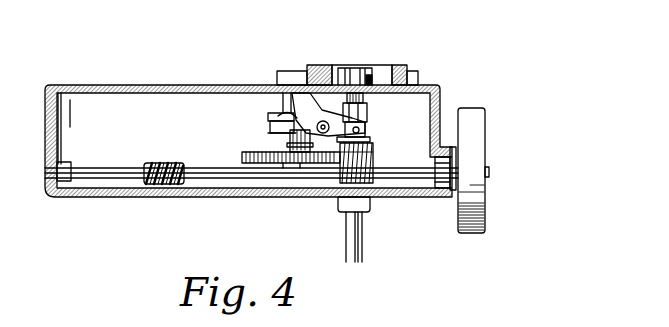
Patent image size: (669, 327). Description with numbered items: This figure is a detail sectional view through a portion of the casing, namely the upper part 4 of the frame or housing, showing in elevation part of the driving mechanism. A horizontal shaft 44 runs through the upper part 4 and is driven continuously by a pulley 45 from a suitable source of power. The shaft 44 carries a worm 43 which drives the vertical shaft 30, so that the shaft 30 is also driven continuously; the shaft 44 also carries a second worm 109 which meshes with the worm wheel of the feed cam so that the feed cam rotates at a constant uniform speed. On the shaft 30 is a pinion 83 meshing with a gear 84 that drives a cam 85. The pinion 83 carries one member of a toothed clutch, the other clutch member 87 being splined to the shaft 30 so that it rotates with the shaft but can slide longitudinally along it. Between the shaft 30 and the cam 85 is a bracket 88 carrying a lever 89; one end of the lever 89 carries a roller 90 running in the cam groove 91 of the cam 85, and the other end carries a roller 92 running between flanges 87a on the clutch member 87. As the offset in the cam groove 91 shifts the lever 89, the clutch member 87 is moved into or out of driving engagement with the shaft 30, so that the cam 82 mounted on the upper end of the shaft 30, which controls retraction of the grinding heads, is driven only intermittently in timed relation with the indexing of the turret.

The upper part 4 is at (46, 141).
The shaft 30 is at (363, 243).
The worm 43 is at (333, 188).
The shaft 44 is at (243, 190).
The pulley 45 is at (478, 137).
The cam 82 is at (385, 76).
The pinion 83 is at (373, 157).
The gear 84 is at (243, 157).
The cam 85 is at (268, 85).
The clutch member 87 is at (370, 146).
The flanges 87a is at (372, 127).
The bracket 88 is at (310, 103).
The lever 89 is at (337, 71).
The roller 90 is at (282, 120).
The cam groove 91 is at (272, 130).
The roller 92 is at (365, 120).
The worm 109 is at (150, 162).